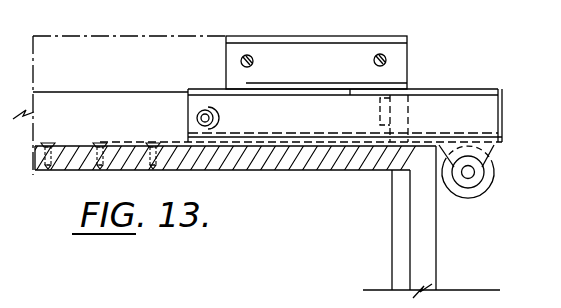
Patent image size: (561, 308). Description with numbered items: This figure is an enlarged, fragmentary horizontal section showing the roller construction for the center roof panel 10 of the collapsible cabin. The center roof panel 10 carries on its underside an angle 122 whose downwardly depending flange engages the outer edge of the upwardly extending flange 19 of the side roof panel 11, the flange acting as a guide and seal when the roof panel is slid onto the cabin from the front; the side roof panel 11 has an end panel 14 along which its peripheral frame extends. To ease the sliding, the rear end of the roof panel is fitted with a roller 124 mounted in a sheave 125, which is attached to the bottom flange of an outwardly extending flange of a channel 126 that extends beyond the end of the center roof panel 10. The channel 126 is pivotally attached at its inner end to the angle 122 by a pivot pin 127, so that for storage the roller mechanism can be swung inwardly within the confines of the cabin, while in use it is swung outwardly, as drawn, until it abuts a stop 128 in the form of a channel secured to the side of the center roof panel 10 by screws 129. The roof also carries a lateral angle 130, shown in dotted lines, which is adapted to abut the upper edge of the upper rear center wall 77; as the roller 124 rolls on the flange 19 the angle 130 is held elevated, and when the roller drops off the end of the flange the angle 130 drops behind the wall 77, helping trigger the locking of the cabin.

The center roof panel 10 is at (137, 37).
The angle 122 is at (103, 92).
The stop 128 is at (282, 37).
The screws 129 is at (241, 64).
The channel 126 is at (500, 98).
The pivot pin 127 is at (197, 121).
The lateral angle 130 is at (392, 115).
The side roof panel 11 is at (327, 166).
The flange 19 is at (65, 143).
The end panel 14 is at (432, 265).
The upper rear center wall 77 is at (398, 229).
The roller 124 is at (484, 183).
The sheave 125 is at (484, 149).